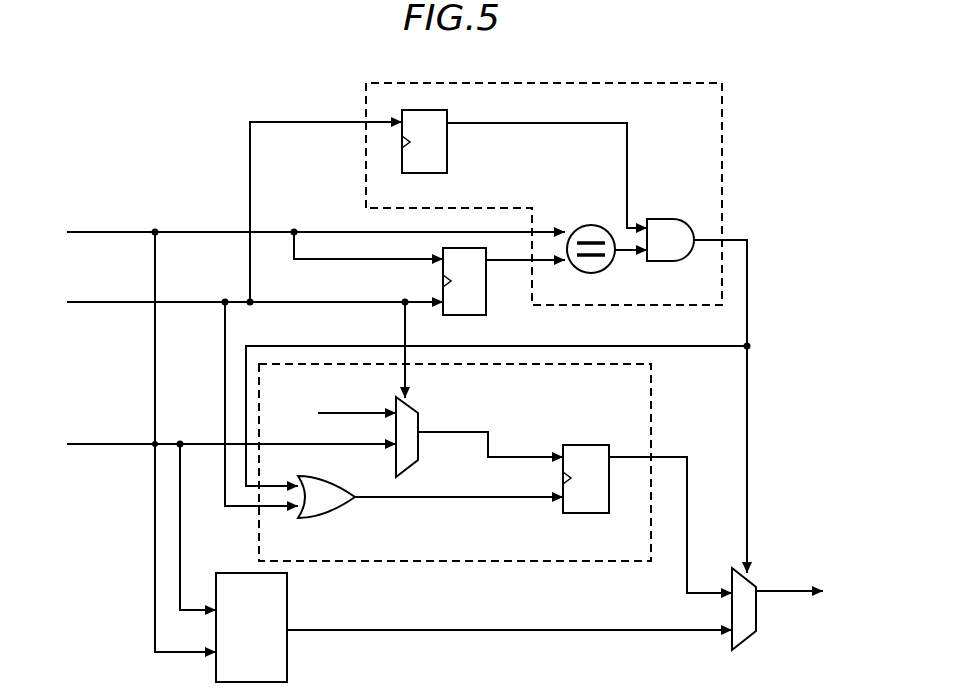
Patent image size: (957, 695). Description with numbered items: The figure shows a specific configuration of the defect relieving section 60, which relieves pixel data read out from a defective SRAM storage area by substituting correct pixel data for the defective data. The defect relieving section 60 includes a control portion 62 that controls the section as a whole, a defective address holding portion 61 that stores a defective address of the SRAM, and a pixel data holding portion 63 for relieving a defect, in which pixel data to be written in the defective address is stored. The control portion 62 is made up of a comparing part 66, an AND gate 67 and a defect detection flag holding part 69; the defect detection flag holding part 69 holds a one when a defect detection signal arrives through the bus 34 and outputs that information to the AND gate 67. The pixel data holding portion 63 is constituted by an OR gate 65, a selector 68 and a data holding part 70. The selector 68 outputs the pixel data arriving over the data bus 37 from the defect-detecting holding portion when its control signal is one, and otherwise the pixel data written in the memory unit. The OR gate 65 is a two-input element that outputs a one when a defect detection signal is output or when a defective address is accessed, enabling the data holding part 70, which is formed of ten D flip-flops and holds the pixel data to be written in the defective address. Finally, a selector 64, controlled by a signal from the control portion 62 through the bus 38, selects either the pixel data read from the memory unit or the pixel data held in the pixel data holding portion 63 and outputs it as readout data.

The defect relieving section 60 is at (210, 124).
The bus 34 is at (110, 303).
The data bus 37 is at (356, 413).
The bus 38 is at (749, 461).
The defective address holding portion 61 is at (470, 276).
The control portion 62 is at (569, 80).
The pixel data holding portion for relieving a defect 63 is at (480, 564).
The selector 64 is at (755, 614).
The OR gate 65 is at (326, 504).
The comparing part 66 is at (590, 226).
The AND gate 67 is at (658, 224).
The selector 68 is at (411, 416).
The defect detection flag holding part 69 is at (447, 150).
The data holding part 70 is at (600, 450).